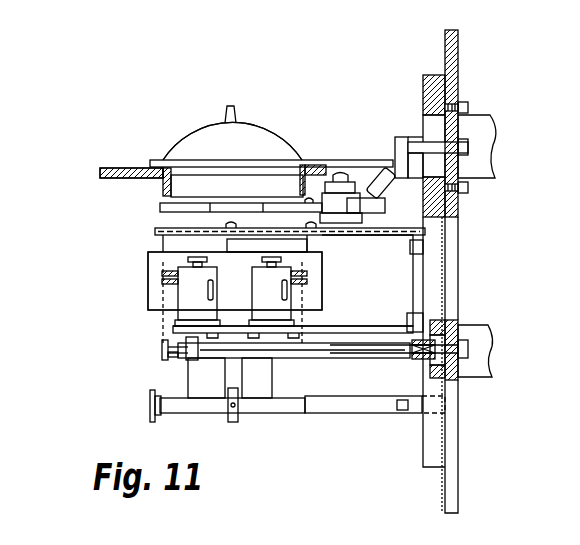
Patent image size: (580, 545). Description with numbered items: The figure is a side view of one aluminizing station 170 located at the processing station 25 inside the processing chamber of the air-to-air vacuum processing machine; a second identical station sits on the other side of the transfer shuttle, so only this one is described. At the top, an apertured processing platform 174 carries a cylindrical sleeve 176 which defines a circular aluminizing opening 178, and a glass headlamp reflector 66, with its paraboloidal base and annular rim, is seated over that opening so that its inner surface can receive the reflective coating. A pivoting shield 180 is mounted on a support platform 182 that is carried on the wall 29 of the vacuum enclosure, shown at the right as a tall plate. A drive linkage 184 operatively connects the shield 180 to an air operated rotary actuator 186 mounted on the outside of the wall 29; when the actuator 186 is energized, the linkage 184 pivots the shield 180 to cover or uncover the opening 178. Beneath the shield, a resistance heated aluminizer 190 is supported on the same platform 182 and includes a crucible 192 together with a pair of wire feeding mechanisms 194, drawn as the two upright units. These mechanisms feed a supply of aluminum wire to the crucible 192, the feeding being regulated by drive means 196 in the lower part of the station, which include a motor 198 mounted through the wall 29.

The processing station 25 is at (161, 128).
The reflector 66 is at (267, 147).
The circular aluminizing opening 178 is at (178, 165).
The apertured processing platform 174 is at (120, 168).
The aluminizing station 170 is at (96, 176).
The cylindrical sleeve 176 is at (166, 185).
The pivoting shield 180 is at (158, 230).
The crucible 192 is at (160, 244).
The resistance heated aluminizer 190 is at (137, 283).
The wire feeding mechanisms 194 is at (170, 302).
The drive linkage 184 is at (391, 216).
The support platform 182 is at (404, 234).
The rear end wall 29 is at (455, 273).
The air operated rotary actuator 186 is at (485, 130).
The motor 198 is at (483, 338).
The drive means 196 is at (400, 356).